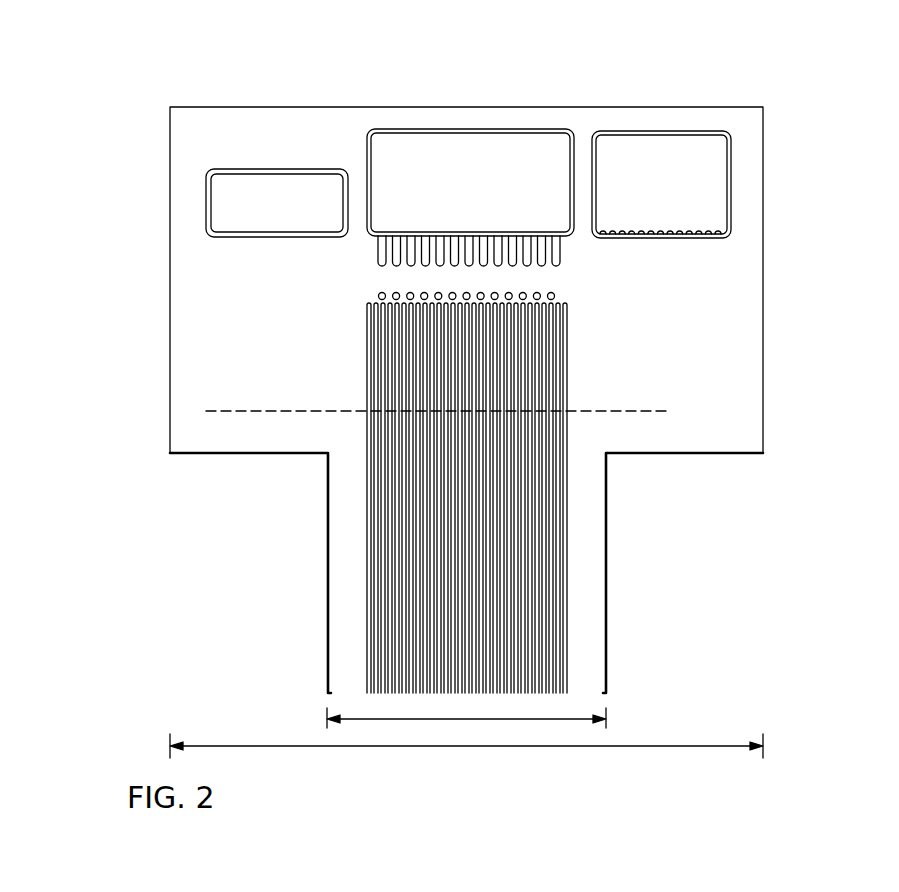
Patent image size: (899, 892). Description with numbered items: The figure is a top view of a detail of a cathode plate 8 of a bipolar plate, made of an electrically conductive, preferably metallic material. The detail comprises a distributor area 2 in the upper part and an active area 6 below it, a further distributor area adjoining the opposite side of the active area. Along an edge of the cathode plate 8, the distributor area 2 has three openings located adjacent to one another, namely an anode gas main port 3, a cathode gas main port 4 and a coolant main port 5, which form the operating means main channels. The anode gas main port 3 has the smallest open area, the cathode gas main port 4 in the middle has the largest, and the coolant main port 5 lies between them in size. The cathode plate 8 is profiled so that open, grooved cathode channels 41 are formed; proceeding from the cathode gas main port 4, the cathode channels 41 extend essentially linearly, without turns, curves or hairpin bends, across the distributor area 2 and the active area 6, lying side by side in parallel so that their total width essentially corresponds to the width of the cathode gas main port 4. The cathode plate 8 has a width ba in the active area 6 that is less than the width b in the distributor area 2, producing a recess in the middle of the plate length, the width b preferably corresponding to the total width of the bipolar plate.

The distributor area 2 is at (785, 107).
The anode gas main port 3 is at (273, 188).
The cathode gas main port 4 is at (485, 148).
The coolant main port 5 is at (686, 148).
The active area 6 is at (785, 452).
The cathode plate 8 is at (845, 104).
The cathode channels 41 is at (383, 529).
The width in active area ba is at (466, 711).
The width of the bipolar plate in distributor area b is at (466, 740).